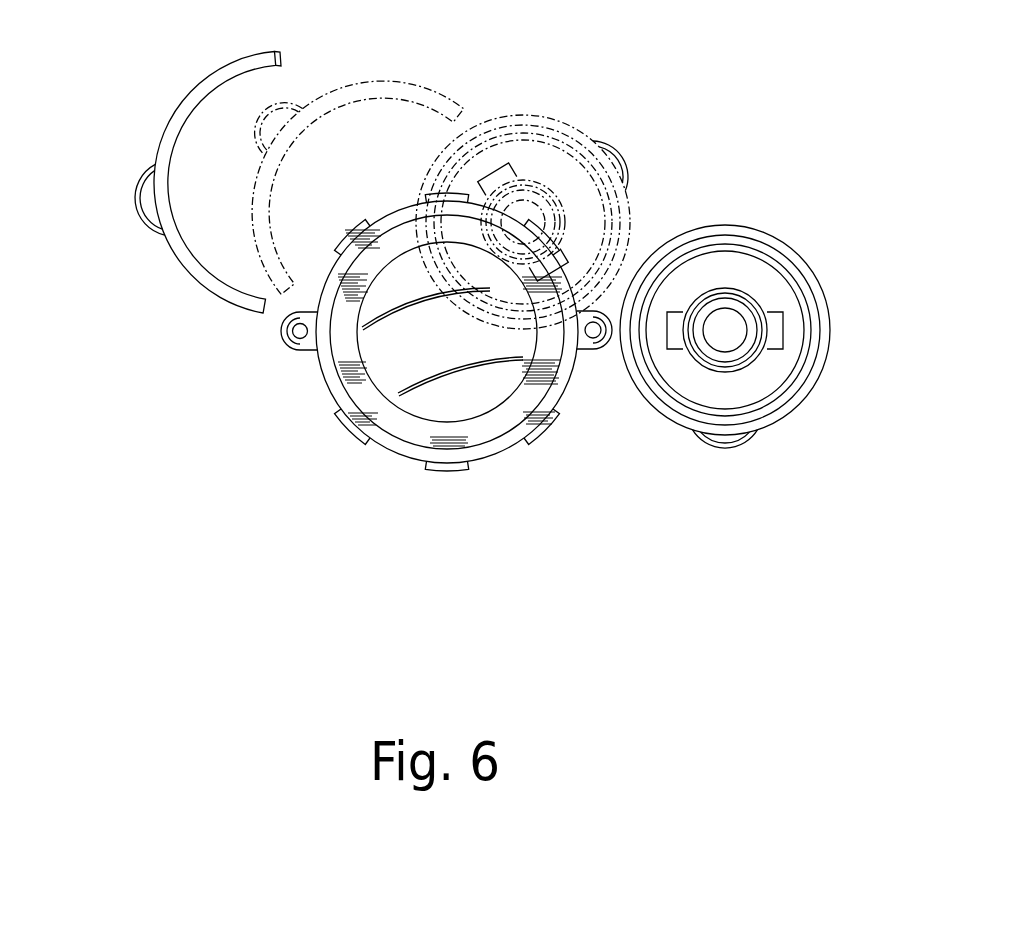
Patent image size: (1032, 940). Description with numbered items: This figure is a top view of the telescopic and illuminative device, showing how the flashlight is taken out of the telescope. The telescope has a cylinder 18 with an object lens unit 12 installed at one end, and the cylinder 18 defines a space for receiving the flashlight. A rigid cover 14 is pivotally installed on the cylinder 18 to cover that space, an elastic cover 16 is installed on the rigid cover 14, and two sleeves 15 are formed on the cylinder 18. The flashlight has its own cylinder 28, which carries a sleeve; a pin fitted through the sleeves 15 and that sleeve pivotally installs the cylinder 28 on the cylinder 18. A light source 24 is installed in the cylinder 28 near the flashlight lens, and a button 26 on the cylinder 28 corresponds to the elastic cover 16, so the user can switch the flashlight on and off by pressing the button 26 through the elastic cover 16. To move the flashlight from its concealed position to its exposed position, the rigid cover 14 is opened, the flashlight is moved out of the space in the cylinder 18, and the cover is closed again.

The object lens unit 12 is at (432, 393).
The rigid cover 14 is at (237, 70).
The sleeves 15 is at (593, 343).
The elastic cover 16 is at (148, 210).
The cylinder 18 is at (332, 388).
The light source 24 is at (730, 330).
The button 26 is at (730, 440).
The cylinder 28 is at (747, 235).